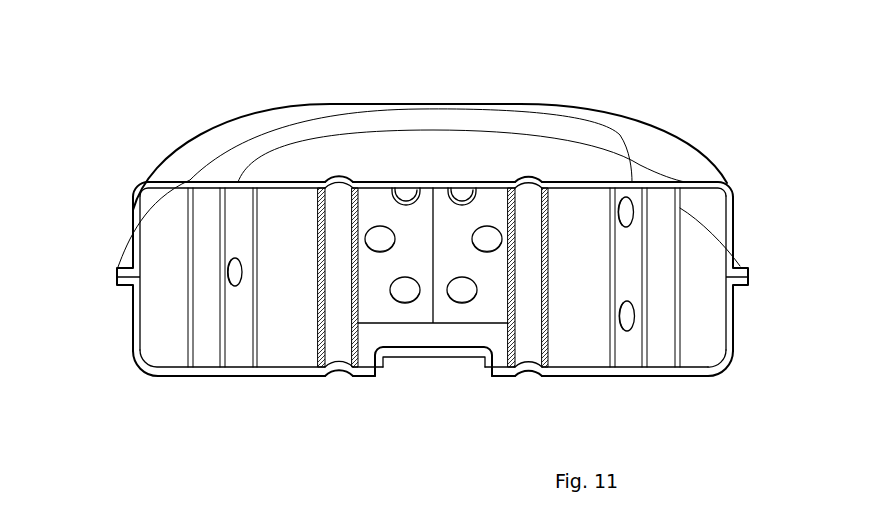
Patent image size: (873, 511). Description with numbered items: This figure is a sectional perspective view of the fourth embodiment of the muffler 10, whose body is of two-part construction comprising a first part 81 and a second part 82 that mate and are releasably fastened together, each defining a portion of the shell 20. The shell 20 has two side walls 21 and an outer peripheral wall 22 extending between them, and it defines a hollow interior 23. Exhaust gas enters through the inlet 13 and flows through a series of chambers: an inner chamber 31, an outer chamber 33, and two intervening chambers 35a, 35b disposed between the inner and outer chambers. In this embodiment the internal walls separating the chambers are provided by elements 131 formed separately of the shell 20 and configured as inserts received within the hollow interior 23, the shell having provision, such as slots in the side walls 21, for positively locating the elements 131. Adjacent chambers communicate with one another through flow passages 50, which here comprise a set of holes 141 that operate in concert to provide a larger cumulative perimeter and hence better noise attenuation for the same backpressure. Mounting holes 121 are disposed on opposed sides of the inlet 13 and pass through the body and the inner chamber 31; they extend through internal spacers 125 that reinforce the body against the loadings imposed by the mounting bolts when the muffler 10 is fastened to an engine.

The muffler 10 is at (172, 113).
The inlet 13 is at (463, 352).
The shell 20 is at (520, 143).
The side walls 21 is at (277, 163).
The outer peripheral wall 22 is at (733, 305).
The hollow interior 23 is at (297, 357).
The inner chamber 31 is at (278, 295).
The outer chamber 33 is at (152, 295).
The intervening chamber 35a is at (233, 327).
The intervening chamber 35b is at (204, 310).
The flow passages 50 is at (385, 225).
The first part 81 is at (710, 372).
The second part 82 is at (692, 162).
The mounting holes 121 is at (338, 182).
The internal spacers 125 is at (358, 330).
The elements 131 is at (645, 262).
The set of holes 141 is at (487, 233).